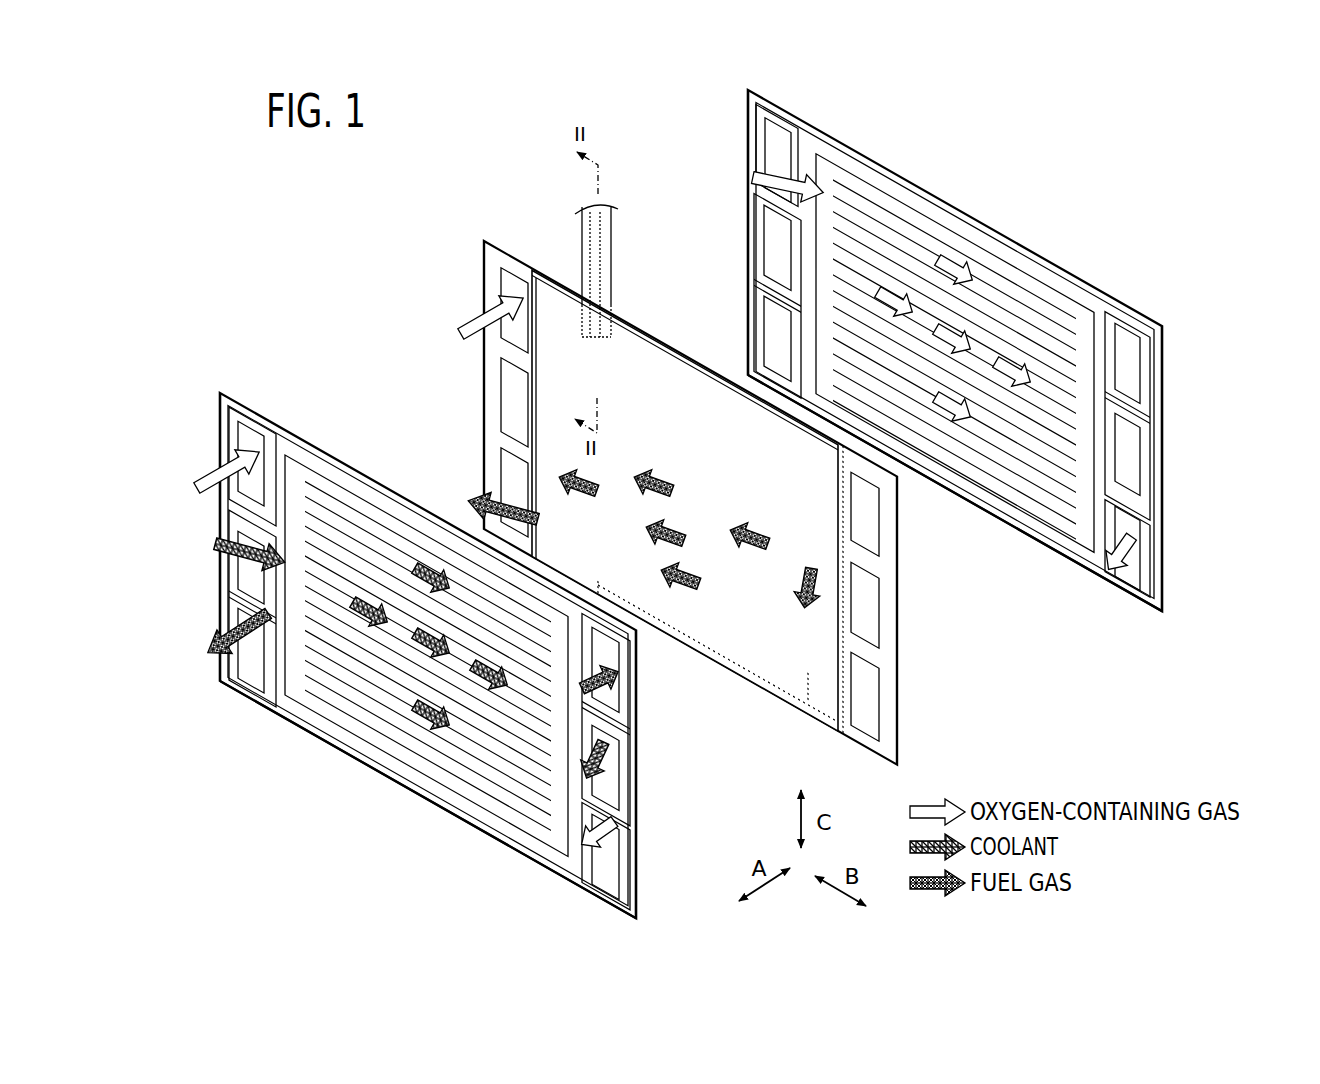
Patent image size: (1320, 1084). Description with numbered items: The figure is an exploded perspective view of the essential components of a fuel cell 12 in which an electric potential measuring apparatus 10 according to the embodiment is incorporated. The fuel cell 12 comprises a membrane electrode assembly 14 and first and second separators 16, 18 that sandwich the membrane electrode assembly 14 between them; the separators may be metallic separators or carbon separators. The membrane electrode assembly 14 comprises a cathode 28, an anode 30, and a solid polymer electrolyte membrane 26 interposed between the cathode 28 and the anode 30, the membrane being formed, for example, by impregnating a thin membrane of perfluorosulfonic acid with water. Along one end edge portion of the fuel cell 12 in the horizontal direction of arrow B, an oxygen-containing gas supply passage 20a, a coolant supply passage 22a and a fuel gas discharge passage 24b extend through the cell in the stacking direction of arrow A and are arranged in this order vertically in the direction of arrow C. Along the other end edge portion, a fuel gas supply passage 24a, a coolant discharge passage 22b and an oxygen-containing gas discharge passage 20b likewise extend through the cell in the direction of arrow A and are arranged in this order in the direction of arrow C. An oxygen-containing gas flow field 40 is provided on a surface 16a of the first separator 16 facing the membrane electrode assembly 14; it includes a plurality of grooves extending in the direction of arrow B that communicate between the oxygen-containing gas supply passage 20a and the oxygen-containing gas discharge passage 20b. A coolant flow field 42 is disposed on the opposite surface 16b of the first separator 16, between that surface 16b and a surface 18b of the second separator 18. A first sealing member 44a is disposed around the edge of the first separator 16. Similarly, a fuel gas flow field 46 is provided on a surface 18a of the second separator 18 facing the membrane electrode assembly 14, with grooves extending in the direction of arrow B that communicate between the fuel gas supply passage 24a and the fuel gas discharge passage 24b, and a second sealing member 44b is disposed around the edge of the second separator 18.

The electric potential measuring apparatus 10 is at (617, 296).
The fuel cell 12 is at (305, 217).
The membrane electrode assembly 14 is at (477, 225).
The first separator 16 is at (1073, 250).
The surface of the first separator 16a is at (976, 512).
The surface of the first separator 16b is at (1011, 522).
The second separator 18 is at (219, 372).
The surface of the second separator 18a is at (497, 838).
The surface of the second separator 18b is at (460, 827).
The oxygen-containing gas supply passage 20a is at (772, 153).
The oxygen-containing gas discharge passage 20b is at (1141, 556).
The coolant supply passage 22a is at (776, 238).
The coolant discharge passage 22b is at (1142, 438).
The fuel gas supply passage 24a is at (1145, 382).
The fuel gas discharge passage 24b is at (776, 316).
The solid polymer electrolyte membrane 26 is at (872, 768).
The cathode 28 is at (808, 676).
The anode 30 is at (766, 648).
The oxygen-containing gas flow field 40 is at (905, 230).
The coolant flow field 42 is at (989, 250).
The first sealing member 44a is at (1109, 598).
The second sealing member 44b is at (553, 882).
The fuel gas flow field 46 is at (325, 470).